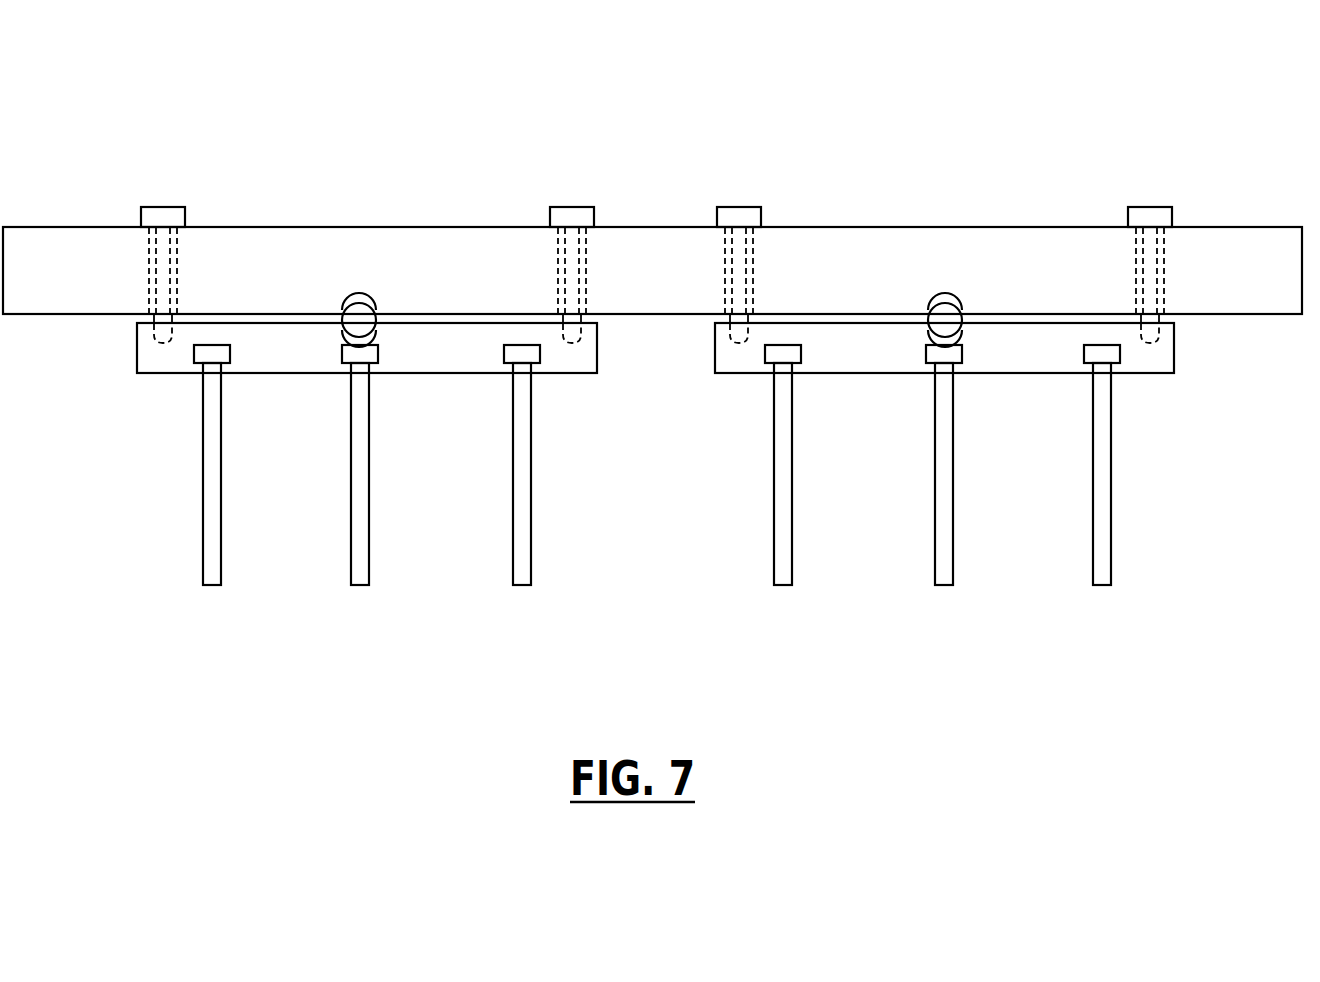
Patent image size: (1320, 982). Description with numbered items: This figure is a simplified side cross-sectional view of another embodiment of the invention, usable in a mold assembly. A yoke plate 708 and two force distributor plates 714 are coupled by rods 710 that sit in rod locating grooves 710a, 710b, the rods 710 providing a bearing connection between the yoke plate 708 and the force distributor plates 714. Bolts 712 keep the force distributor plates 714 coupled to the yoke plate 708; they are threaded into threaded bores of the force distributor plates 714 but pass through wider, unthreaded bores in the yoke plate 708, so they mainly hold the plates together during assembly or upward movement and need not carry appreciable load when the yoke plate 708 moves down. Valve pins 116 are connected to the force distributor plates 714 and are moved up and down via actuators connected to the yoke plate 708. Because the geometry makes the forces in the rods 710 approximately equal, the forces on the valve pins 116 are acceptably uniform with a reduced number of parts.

The yoke plate 708 is at (1220, 227).
The rods 710 is at (357, 318).
The rod locating groove 710a is at (372, 336).
The rod locating groove 710b is at (364, 304).
The bolts 712 is at (161, 207).
The force distributor plates 714 is at (567, 376).
The valve pins 116 is at (203, 563).